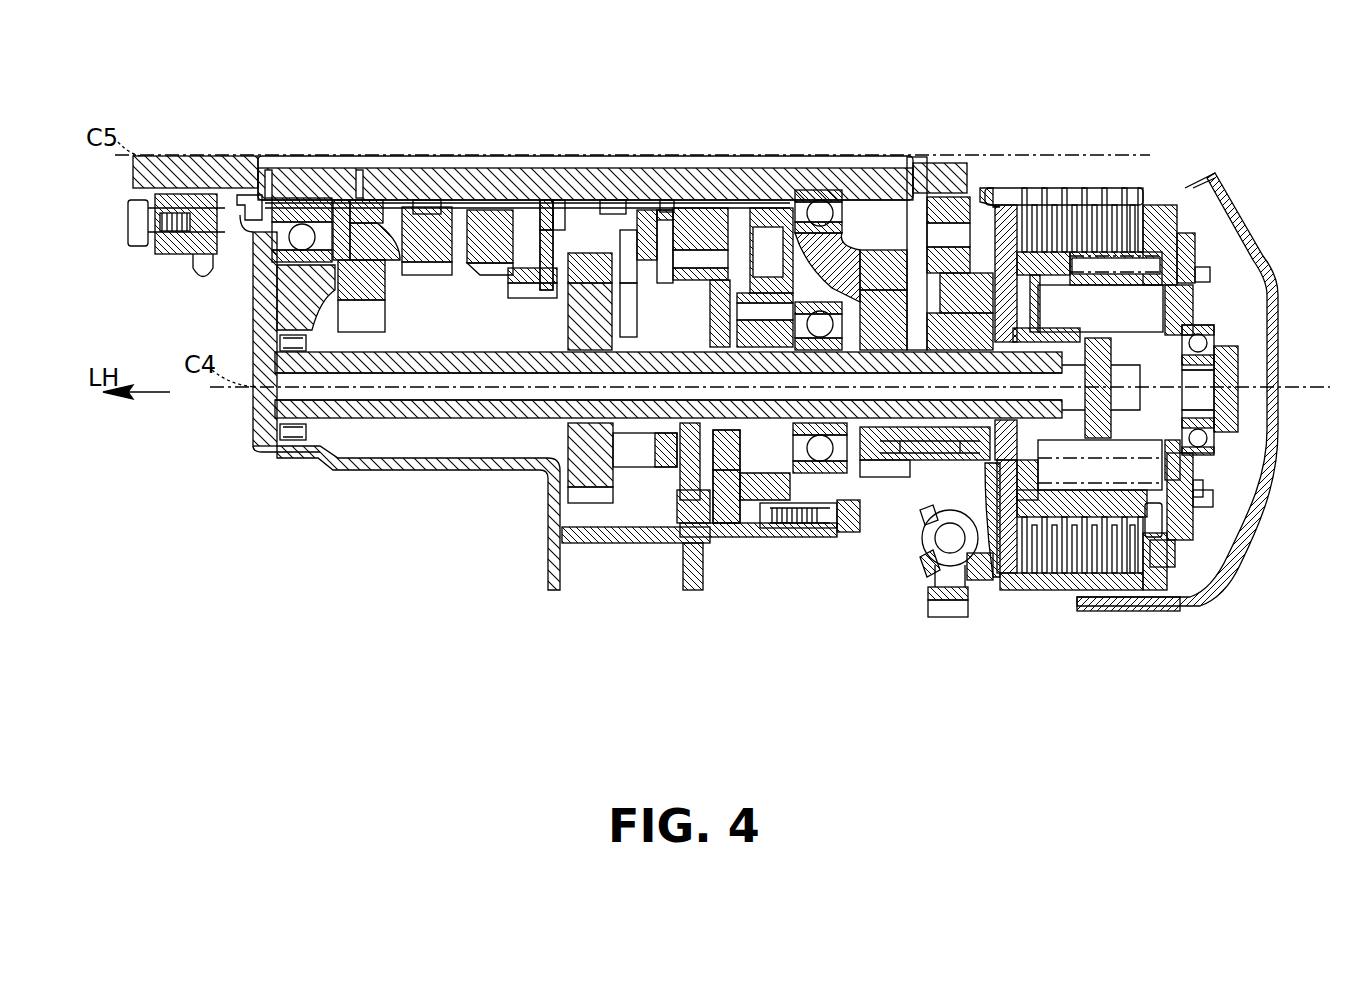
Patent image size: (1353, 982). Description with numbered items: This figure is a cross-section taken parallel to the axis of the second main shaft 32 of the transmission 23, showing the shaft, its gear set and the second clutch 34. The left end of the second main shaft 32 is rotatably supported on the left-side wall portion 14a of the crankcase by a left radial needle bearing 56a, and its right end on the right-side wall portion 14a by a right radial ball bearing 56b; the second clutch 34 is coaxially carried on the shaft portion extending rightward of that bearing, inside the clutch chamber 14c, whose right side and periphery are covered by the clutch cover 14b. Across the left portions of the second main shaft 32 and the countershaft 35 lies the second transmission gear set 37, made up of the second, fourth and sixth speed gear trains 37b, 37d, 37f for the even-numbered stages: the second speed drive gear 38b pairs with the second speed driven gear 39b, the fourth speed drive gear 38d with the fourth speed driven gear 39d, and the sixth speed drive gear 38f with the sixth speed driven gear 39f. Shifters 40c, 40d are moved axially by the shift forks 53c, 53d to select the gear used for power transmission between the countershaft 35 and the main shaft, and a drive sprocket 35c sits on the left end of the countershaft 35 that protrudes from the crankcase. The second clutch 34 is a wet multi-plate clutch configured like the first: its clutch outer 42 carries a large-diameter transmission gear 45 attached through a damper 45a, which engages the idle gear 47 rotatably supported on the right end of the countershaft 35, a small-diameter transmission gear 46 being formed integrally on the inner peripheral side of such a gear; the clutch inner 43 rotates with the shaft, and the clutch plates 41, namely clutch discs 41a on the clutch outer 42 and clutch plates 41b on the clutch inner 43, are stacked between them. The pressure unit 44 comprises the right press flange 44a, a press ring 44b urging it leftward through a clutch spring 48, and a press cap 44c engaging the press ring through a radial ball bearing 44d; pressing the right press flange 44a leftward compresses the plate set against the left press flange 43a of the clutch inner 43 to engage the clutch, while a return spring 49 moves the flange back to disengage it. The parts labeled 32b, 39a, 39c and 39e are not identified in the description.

The wall portion 14a is at (280, 290).
The clutch cover 14b is at (1248, 212).
The clutch chamber 14c is at (1215, 257).
The transmission 23 is at (937, 130).
The second main shaft 32 is at (398, 428).
The shaft end bolt 32b is at (850, 534).
The second clutch 34 is at (1188, 217).
The countershaft 35 is at (383, 165).
The driving unit 35c is at (185, 246).
The second transmission gear set 37 is at (628, 505).
The second speed gear train 37b is at (800, 658).
The fourth speed gear train 37d is at (462, 92).
The sixth speed gear train 37f is at (805, 48).
The second speed drive gear 38b is at (738, 360).
The fourth speed drive gear 38d is at (546, 290).
The sixth speed drive gear 38f is at (738, 360).
The gear boss 39a is at (383, 320).
The second speed driven gear 39b is at (704, 360).
The gear hub 39c is at (525, 290).
The fourth speed driven gear 39d is at (543, 200).
The gear body 39e is at (428, 270).
The sixth speed driven gear 39f is at (705, 360).
The shifter 40c is at (578, 348).
The shifter 40d is at (713, 212).
The clutch plates 41 is at (1150, 100).
The clutch discs 41a is at (1114, 205).
The clutch plates 41b is at (1064, 188).
The clutch outer 42 is at (1100, 612).
The clutch inner 43 is at (1150, 542).
The left press flange 43a is at (1013, 566).
The pressure unit 44 is at (1202, 545).
The right press flange 44a is at (1176, 565).
The press ring 44b is at (1194, 472).
The press cap 44c is at (1240, 410).
The radial ball bearing 44d is at (1216, 450).
The large-diameter transmission gear 45 is at (948, 618).
The damper 45a is at (925, 578).
The small-diameter transmission gear 46 is at (883, 480).
The idle gear 47 is at (918, 200).
The clutch spring 48 is at (1120, 445).
The return spring 49 is at (1115, 287).
The shift fork 53c is at (640, 292).
The shift fork 53d is at (672, 215).
The left radial needle bearing 56a is at (300, 440).
The right radial ball bearing 56b is at (820, 532).